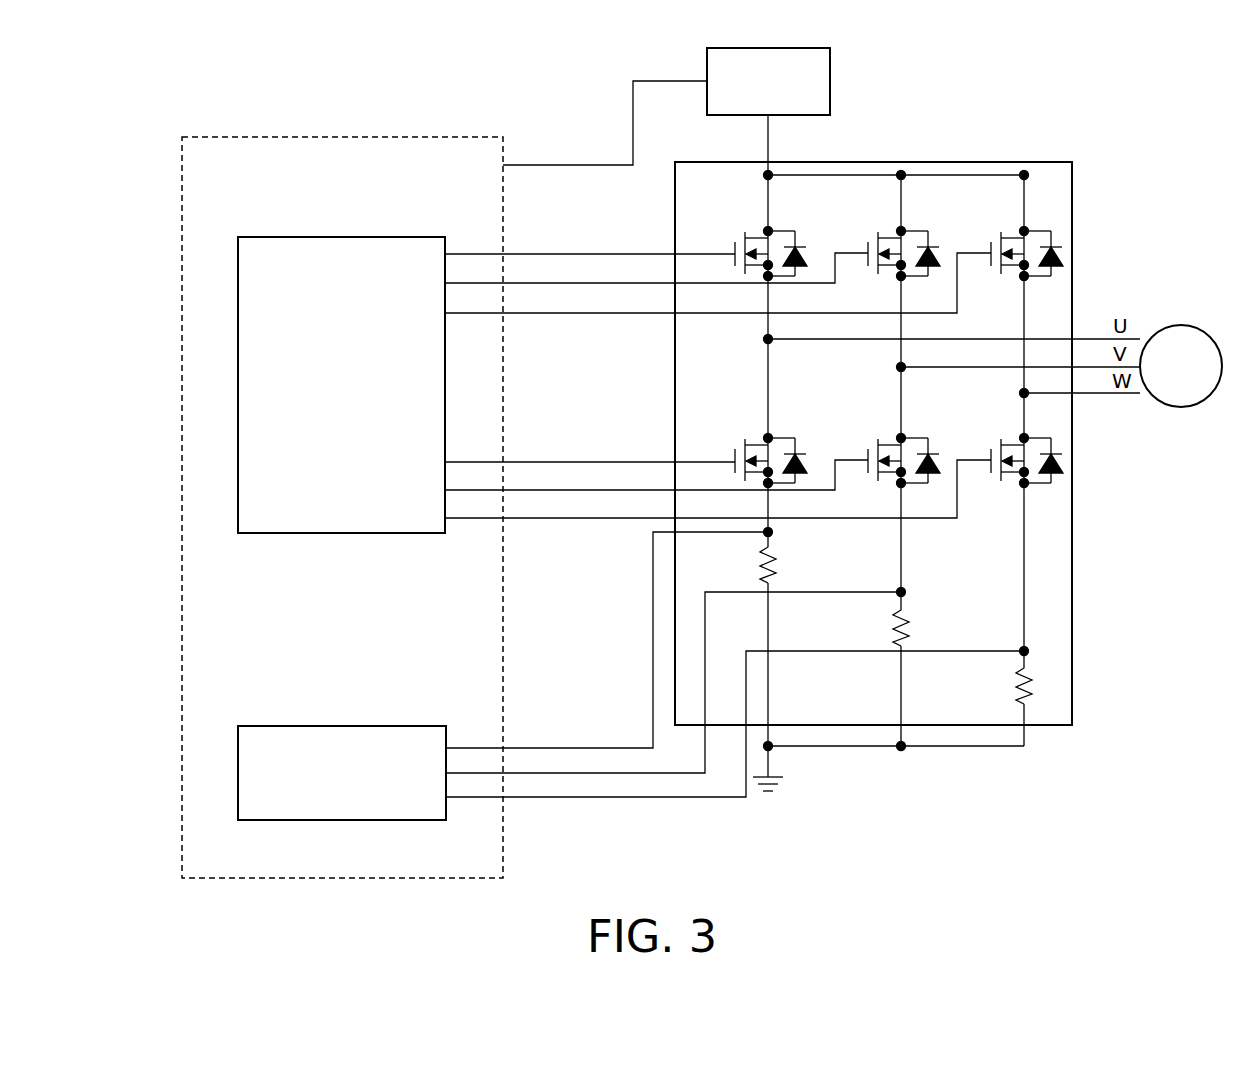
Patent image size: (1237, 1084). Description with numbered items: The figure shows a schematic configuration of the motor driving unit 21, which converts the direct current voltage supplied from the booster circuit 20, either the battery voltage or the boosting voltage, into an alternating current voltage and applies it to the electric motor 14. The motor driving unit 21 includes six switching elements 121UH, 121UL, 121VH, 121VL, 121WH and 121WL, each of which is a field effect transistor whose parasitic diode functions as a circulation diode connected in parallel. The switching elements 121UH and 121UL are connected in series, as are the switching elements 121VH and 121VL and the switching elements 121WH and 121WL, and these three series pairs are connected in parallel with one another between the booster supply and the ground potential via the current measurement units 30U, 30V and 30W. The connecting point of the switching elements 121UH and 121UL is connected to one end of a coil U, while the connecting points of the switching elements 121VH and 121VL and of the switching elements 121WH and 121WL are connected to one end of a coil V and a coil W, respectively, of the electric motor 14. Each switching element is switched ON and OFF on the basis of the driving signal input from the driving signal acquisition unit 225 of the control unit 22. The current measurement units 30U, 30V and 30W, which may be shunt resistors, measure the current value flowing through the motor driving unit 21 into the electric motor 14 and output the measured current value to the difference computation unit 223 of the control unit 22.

The control unit 22 is at (418, 137).
The driving signal acquisition unit 225 is at (367, 220).
The difference computation unit 223 is at (367, 709).
The booster circuit 20 is at (831, 80).
The motor driving unit 21 is at (1045, 162).
The electric motor 14 is at (1178, 327).
The switching element 121UH is at (792, 231).
The switching element 121VH is at (924, 231).
The switching element 121WH is at (1042, 231).
The switching element 121UL is at (795, 438).
The switching element 121VL is at (924, 438).
The switching element 121WL is at (1042, 438).
The current measurement unit 30U is at (777, 552).
The current measurement unit 30V is at (910, 613).
The current measurement unit 30W is at (1031, 672).